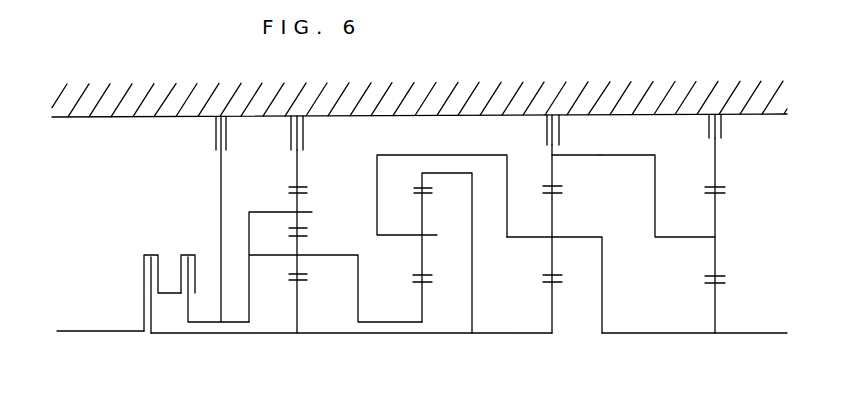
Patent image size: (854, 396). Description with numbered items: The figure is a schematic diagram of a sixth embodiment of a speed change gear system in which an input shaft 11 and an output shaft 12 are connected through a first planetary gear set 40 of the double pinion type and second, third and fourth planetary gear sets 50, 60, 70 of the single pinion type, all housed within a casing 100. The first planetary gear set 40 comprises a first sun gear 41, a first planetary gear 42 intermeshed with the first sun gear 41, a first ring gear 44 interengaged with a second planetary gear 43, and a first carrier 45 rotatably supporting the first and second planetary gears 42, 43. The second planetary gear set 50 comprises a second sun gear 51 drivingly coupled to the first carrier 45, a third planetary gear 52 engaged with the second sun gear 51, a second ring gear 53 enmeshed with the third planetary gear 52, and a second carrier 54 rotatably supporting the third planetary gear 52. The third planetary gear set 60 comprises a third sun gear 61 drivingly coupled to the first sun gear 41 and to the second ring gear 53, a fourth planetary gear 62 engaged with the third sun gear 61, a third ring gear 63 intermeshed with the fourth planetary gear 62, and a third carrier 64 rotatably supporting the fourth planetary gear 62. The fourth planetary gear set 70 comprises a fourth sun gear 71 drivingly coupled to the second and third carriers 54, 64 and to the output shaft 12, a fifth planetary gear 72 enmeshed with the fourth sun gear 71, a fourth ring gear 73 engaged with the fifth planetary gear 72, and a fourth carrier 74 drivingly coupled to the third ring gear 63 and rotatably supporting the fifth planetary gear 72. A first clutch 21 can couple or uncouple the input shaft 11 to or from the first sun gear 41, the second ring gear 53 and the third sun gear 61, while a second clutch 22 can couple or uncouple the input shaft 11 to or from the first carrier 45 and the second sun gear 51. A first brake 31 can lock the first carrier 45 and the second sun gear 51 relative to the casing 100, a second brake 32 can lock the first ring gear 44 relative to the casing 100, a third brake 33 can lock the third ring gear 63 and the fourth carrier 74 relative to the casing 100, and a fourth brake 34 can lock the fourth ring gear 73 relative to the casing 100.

The casing 100 is at (433, 85).
The input shaft 11 is at (105, 335).
The output shaft 12 is at (675, 335).
The first clutch 21 is at (152, 251).
The second clutch 22 is at (187, 251).
The first brake 31 is at (213, 128).
The second brake 32 is at (289, 130).
The third brake 33 is at (562, 123).
The fourth brake 34 is at (724, 128).
The first planetary gear set 40 is at (303, 303).
The first sun gear 41 is at (295, 291).
The first planetary gear 42 is at (300, 262).
The second planetary gear 43 is at (298, 221).
The first ring gear 44 is at (297, 165).
The first carrier 45 is at (281, 194).
The second planetary gear set 50 is at (427, 308).
The second sun gear 51 is at (422, 298).
The third planetary gear 52 is at (422, 257).
The second ring gear 53 is at (430, 181).
The second carrier 54 is at (442, 196).
The third planetary gear set 60 is at (556, 309).
The third sun gear 61 is at (553, 295).
The fourth planetary gear 62 is at (553, 257).
The third ring gear 63 is at (553, 168).
The third carrier 64 is at (554, 244).
The fourth planetary gear set 70 is at (718, 310).
The fourth sun gear 71 is at (716, 300).
The fifth planetary gear 72 is at (716, 253).
The fourth ring gear 73 is at (716, 168).
The fourth carrier 74 is at (657, 196).